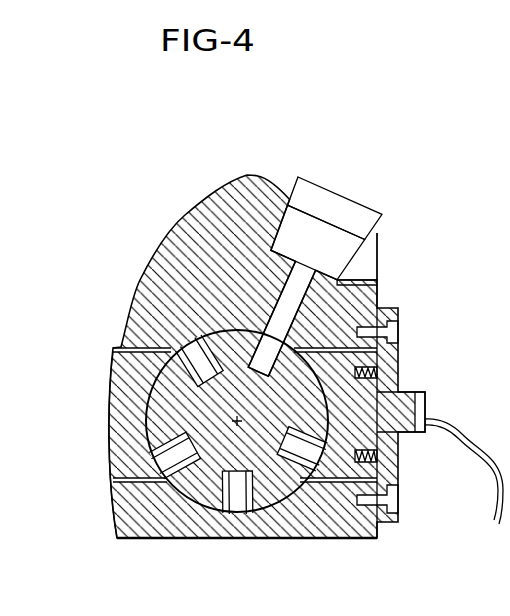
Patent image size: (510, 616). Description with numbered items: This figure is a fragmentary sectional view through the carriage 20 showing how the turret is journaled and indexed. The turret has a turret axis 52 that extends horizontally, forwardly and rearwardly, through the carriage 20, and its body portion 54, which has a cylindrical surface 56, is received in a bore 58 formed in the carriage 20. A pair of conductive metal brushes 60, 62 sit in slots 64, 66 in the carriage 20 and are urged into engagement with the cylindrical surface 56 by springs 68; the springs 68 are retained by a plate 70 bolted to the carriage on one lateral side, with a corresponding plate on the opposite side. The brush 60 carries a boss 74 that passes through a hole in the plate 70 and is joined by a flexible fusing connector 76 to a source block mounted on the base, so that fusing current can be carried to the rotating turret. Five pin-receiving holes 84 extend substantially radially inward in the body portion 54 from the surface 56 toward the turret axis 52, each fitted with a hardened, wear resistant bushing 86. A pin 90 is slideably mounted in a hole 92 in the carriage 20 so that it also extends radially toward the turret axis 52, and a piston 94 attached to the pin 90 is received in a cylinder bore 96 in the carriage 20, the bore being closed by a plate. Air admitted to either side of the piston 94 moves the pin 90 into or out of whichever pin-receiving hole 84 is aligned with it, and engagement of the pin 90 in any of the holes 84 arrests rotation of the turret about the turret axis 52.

The carriage 20 is at (270, 178).
The turret axis 52 is at (235, 420).
The body portion 54 is at (182, 484).
The cylindrical surface 56 is at (288, 534).
The bore 58 is at (196, 515).
The conductive metal brush 60 is at (338, 487).
The conductive metal brush 62 is at (112, 438).
The slot 64 is at (400, 475).
The slot 66 is at (113, 483).
The spring 68 is at (377, 373).
The plate 70 is at (400, 345).
The boss 74 is at (426, 410).
The flexible fusing connector 76 is at (502, 517).
The pin-receiving hole 84 is at (135, 301).
The bushing 86 is at (176, 363).
The pin 90 is at (350, 278).
The hole 92 is at (303, 312).
The piston 94 is at (302, 228).
The cylinder bore 96 is at (338, 228).